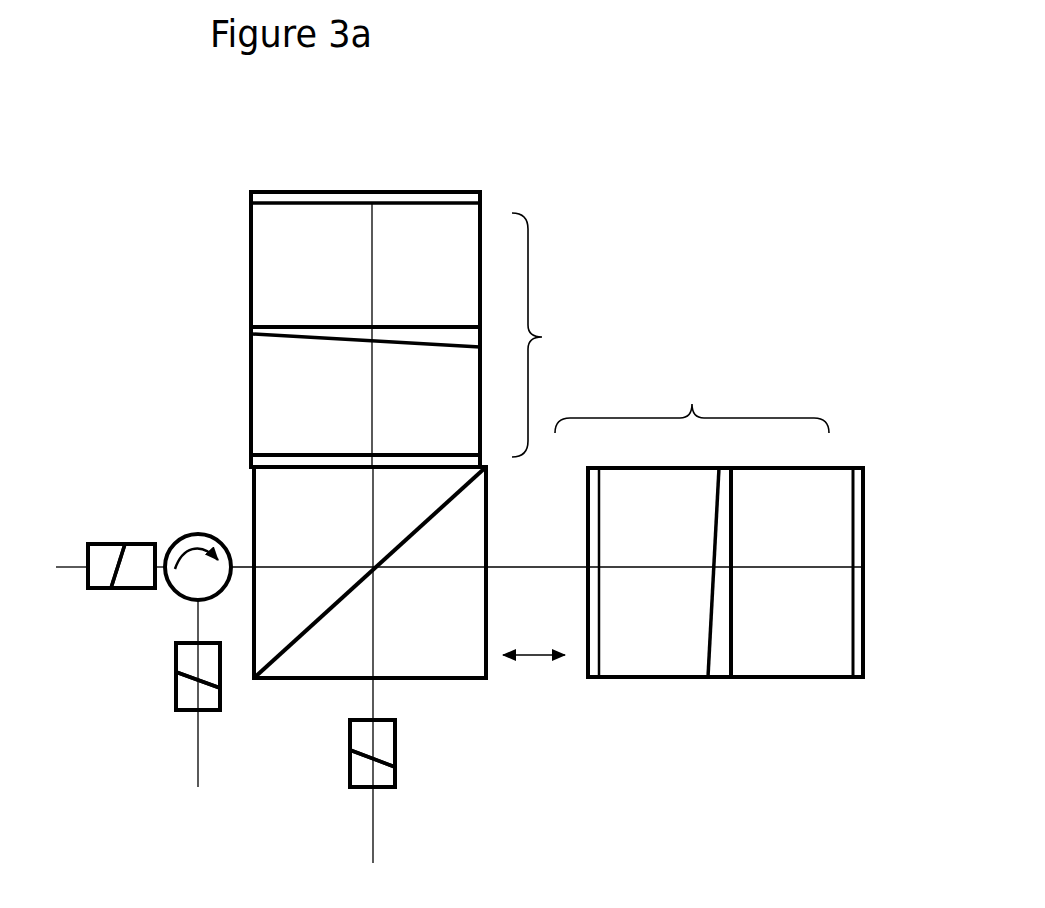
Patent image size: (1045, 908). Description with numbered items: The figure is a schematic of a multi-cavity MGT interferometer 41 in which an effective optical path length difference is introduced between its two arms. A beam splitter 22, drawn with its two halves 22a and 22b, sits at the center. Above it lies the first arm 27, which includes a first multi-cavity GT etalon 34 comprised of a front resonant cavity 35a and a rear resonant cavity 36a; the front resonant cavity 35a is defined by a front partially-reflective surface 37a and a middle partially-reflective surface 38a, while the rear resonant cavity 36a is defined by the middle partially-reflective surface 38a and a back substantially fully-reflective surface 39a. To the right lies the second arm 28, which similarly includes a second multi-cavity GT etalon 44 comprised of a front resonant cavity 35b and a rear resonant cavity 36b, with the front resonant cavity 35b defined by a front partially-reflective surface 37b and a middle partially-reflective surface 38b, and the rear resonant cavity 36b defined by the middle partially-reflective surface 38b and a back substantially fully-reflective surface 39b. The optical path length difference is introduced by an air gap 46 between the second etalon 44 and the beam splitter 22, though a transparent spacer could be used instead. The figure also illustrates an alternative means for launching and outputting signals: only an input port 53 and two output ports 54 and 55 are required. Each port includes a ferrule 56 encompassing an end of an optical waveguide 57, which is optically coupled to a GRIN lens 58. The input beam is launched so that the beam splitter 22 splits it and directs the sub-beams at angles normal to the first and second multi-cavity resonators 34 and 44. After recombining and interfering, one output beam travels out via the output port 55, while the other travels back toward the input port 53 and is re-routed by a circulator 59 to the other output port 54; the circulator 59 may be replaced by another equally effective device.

The beam splitter 22 is at (393, 616).
The first prism half of beam splitter 22a is at (370, 572).
The second prism half of beam splitter 22b is at (370, 572).
The first arm 27 is at (553, 335).
The second arm 28 is at (692, 401).
The first multi-cavity GT etalon 34 is at (296, 284).
The front resonant cavity 35a is at (365, 391).
The front resonant cavity 35b is at (659, 572).
The rear resonant cavity 36a is at (365, 265).
The rear resonant cavity 36b is at (797, 572).
The front partially-reflective surface 37a is at (248, 458).
The front partially-reflective surface 37b is at (588, 678).
The middle partially-reflective surface 38a is at (248, 325).
The middle partially-reflective surface 38b is at (730, 678).
The back substantially fully-reflective surface 39a is at (352, 190).
The back substantially fully-reflective surface 39b is at (865, 467).
The interferometer 41 is at (381, 284).
The second multi-cavity GT etalon 44 is at (748, 551).
The air gap 46 is at (534, 633).
The input port 53 is at (120, 510).
The output port 54 is at (152, 723).
The output port 55 is at (408, 799).
The ferrule 56 is at (176, 700).
The optical waveguide 57 is at (65, 565).
The GRIN lens 58 is at (142, 590).
The circulator 59 is at (197, 532).